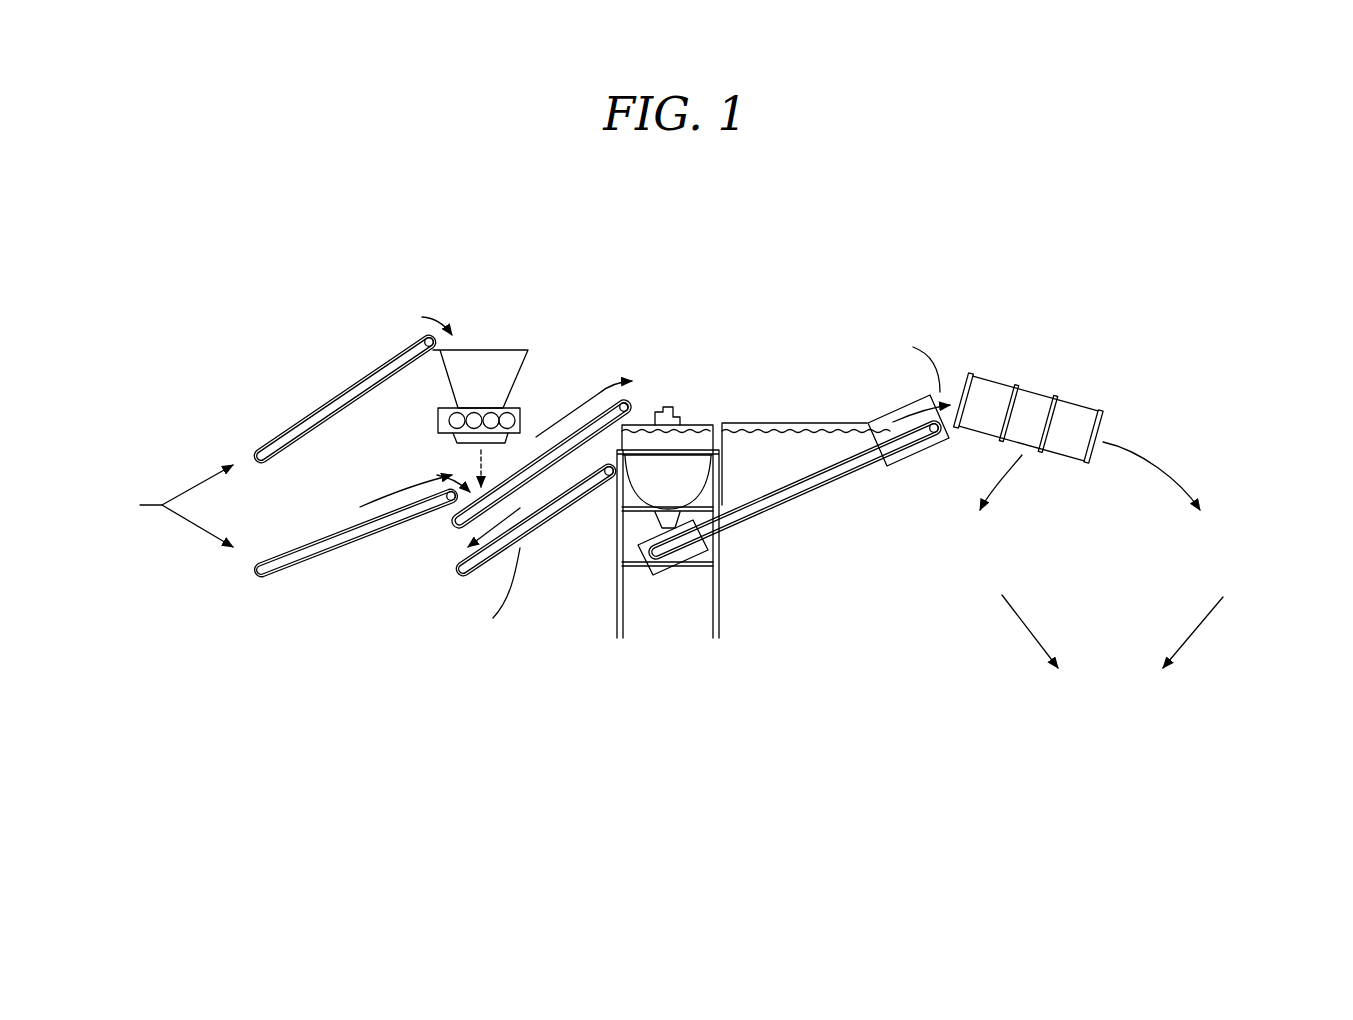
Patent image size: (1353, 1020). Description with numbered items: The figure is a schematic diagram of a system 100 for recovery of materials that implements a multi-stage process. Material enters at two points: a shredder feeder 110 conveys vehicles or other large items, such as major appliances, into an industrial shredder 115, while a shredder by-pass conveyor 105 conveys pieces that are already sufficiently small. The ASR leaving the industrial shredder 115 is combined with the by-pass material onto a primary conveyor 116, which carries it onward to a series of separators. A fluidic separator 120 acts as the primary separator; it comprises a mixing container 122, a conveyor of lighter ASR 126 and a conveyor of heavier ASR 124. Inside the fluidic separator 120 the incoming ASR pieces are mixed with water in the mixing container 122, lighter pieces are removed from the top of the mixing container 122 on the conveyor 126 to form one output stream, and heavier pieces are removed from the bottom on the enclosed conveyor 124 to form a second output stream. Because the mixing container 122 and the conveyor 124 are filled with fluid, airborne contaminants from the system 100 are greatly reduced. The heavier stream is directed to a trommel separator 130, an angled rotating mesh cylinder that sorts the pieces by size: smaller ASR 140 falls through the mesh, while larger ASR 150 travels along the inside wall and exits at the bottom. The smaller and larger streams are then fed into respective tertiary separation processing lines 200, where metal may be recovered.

The system 100 is at (840, 232).
The shredder by-pass conveyor 105 is at (362, 547).
The shredder feeder 110 is at (326, 390).
The industrial shredder 115 is at (485, 373).
The primary conveyor 116 is at (572, 417).
The fluidic separator 120 is at (753, 551).
The mixing container 122 is at (667, 482).
The conveyor of heavier ASR 124 is at (825, 492).
The conveyor of lighter ASR 126 is at (583, 500).
The trommel separator 130 is at (1040, 388).
The smaller ASR 140 is at (1004, 561).
The larger ASR 150 is at (1177, 555).
The tertiary separation processing line 200 is at (1112, 697).